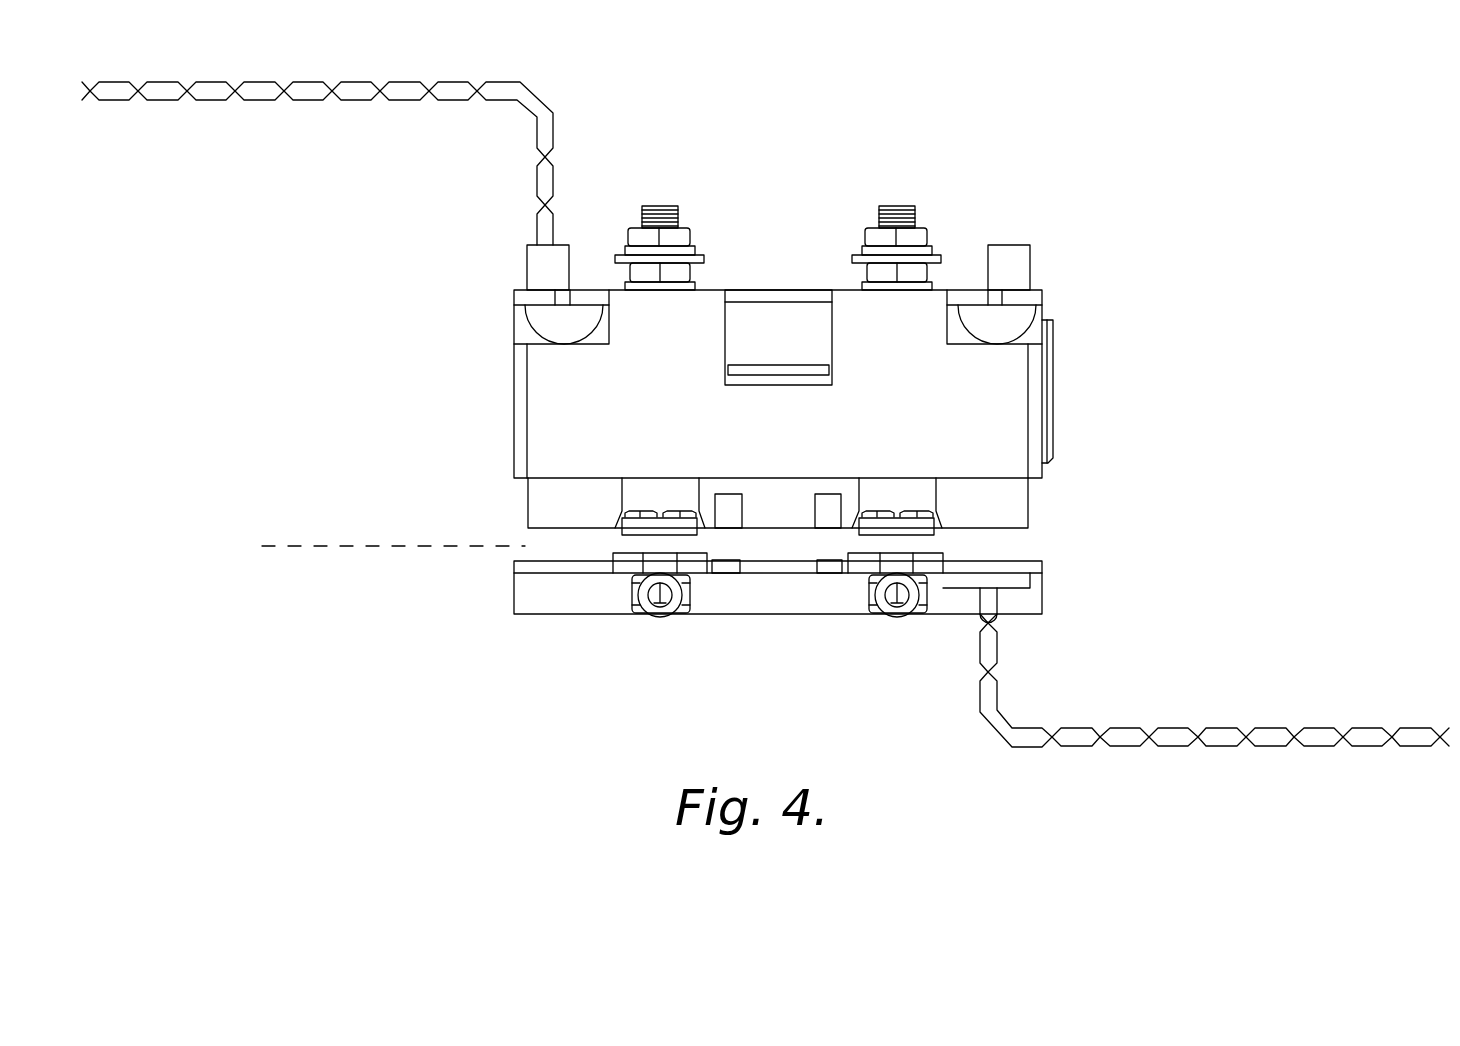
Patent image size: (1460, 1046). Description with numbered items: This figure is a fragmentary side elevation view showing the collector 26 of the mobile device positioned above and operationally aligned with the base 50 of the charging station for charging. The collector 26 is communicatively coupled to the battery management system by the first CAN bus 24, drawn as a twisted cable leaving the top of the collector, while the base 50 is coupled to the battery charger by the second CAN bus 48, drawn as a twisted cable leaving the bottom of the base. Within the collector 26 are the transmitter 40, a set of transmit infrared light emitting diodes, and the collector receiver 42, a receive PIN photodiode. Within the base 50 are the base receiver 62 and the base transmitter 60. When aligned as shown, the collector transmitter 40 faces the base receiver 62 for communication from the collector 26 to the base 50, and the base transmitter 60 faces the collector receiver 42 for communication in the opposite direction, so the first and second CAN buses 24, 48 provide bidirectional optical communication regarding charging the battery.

The first CAN bus 24 is at (505, 190).
The collector 26 is at (498, 436).
The first set of transmit IR light emitting diodes 40 is at (663, 447).
The first receive PIN photodiode 42 is at (830, 500).
The second CAN bus 48 is at (1024, 651).
The base 50 is at (500, 592).
The second set of transmit IR light emitting diodes 60 is at (830, 565).
The second receive PIN photodiode 62 is at (730, 565).